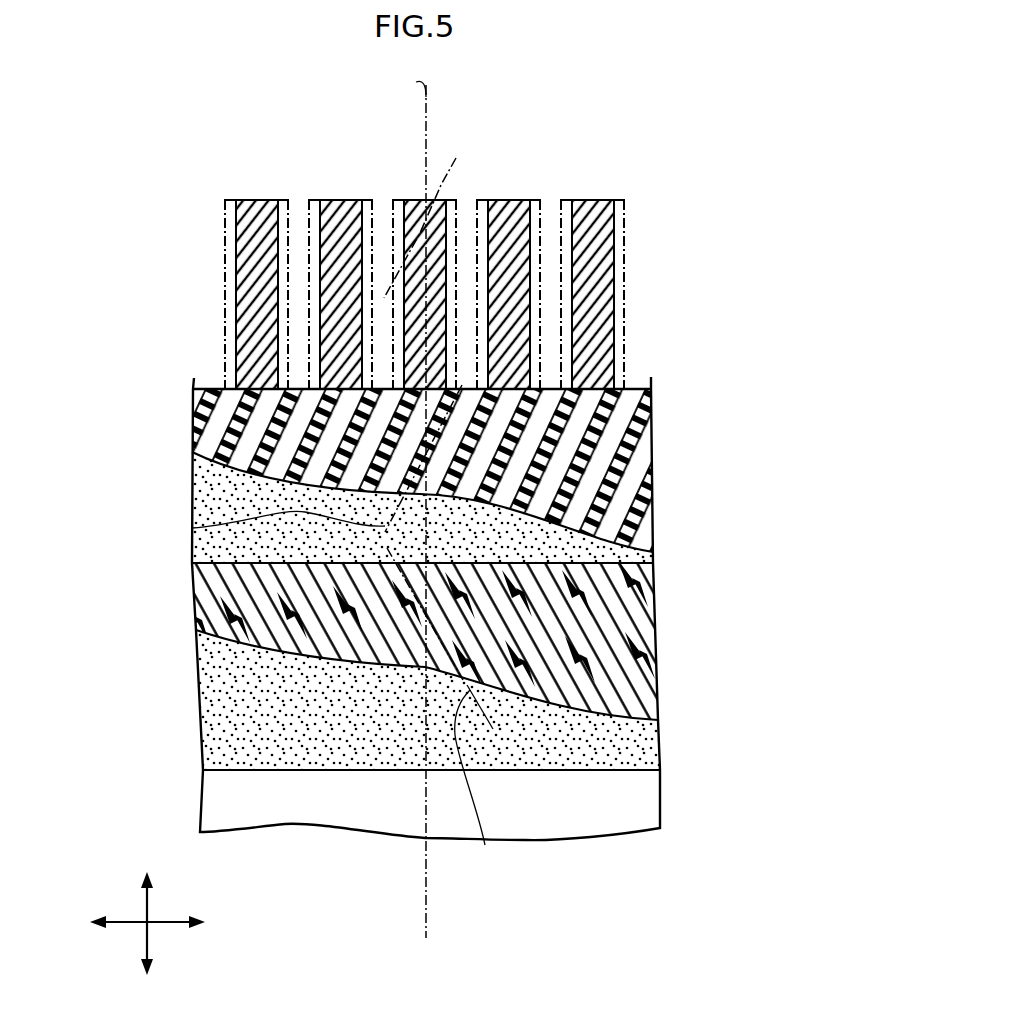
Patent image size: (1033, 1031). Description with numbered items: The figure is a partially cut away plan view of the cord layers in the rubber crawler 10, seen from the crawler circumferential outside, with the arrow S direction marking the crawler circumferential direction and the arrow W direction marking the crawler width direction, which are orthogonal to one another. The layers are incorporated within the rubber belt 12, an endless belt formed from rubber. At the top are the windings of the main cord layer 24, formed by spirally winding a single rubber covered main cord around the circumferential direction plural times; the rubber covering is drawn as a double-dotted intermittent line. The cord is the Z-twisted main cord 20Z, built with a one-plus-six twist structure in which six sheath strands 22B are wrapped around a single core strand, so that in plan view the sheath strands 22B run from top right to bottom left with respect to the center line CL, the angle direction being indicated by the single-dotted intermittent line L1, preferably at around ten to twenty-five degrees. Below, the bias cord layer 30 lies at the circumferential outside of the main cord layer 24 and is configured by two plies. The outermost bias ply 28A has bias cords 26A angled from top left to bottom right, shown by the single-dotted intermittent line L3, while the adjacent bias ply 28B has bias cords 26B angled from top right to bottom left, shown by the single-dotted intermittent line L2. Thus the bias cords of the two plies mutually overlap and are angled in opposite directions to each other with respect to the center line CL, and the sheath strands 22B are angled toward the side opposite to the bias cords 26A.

The rubber crawler 10 is at (125, 108).
The rubber belt 12 is at (658, 796).
The main cord formed by Z-twisting the strands 20Z is at (232, 243).
The sheath strands 22B is at (253, 200).
The main cord layer 24 is at (645, 178).
The bias cords 26B is at (637, 388).
The bias ply 28B is at (657, 512).
The bias cords 26A is at (657, 652).
The bias ply 28A is at (665, 743).
The bias cord layer 30 is at (743, 540).
The center line CL is at (416, 82).
The single-dotted intermittent line L1 is at (456, 158).
The single-dotted intermittent line L2 is at (192, 528).
The single-dotted intermittent line L3 is at (485, 845).
The arrow S direction S is at (147, 899).
The arrow W direction W is at (165, 921).